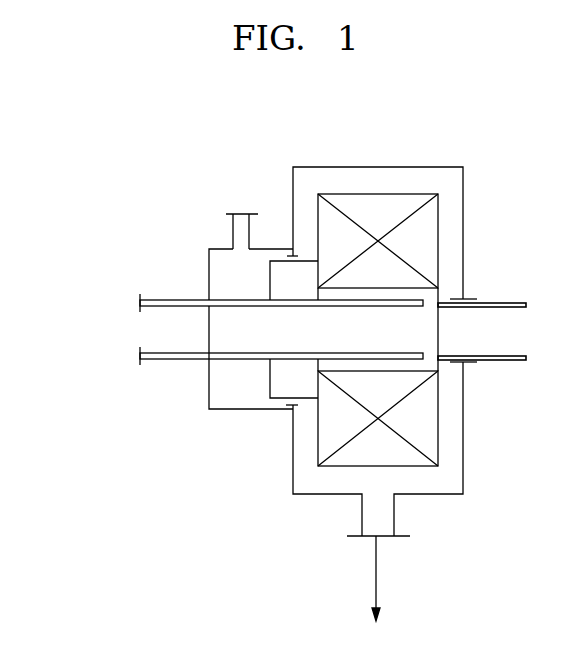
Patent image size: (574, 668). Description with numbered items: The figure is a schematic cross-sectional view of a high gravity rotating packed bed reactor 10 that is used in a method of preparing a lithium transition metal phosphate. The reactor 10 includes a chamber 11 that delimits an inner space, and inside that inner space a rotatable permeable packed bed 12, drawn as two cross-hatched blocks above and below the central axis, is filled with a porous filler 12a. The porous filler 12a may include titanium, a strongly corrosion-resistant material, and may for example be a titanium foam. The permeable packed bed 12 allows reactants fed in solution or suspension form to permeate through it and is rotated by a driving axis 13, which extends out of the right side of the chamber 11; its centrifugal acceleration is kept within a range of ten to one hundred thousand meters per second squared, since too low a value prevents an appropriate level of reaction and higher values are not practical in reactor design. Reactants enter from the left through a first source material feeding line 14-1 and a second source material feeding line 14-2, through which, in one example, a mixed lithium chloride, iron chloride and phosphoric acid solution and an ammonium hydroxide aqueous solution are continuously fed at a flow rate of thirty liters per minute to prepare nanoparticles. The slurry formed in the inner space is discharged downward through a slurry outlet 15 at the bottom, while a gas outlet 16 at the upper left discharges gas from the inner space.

The high gravity rotating packed bed reactor 10 is at (447, 145).
The chamber 11 is at (381, 167).
The permeable packed bed 12 is at (438, 242).
The porous filler 12a is at (430, 227).
The driving axis 13 is at (502, 303).
The first source material feeding line 14-1 is at (120, 303).
The second source material feeding line 14-2 is at (120, 355).
The slurry outlet 15 is at (388, 518).
The gas outlet 16 is at (233, 229).